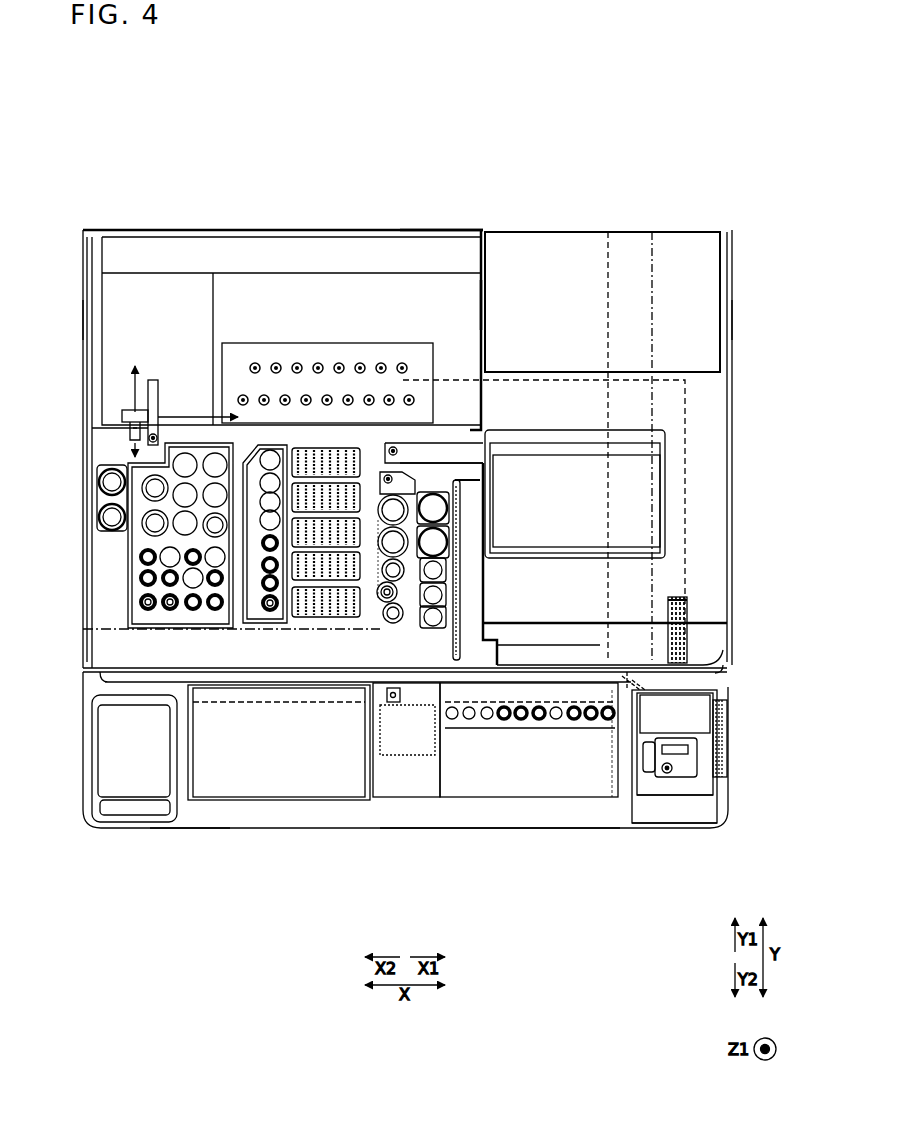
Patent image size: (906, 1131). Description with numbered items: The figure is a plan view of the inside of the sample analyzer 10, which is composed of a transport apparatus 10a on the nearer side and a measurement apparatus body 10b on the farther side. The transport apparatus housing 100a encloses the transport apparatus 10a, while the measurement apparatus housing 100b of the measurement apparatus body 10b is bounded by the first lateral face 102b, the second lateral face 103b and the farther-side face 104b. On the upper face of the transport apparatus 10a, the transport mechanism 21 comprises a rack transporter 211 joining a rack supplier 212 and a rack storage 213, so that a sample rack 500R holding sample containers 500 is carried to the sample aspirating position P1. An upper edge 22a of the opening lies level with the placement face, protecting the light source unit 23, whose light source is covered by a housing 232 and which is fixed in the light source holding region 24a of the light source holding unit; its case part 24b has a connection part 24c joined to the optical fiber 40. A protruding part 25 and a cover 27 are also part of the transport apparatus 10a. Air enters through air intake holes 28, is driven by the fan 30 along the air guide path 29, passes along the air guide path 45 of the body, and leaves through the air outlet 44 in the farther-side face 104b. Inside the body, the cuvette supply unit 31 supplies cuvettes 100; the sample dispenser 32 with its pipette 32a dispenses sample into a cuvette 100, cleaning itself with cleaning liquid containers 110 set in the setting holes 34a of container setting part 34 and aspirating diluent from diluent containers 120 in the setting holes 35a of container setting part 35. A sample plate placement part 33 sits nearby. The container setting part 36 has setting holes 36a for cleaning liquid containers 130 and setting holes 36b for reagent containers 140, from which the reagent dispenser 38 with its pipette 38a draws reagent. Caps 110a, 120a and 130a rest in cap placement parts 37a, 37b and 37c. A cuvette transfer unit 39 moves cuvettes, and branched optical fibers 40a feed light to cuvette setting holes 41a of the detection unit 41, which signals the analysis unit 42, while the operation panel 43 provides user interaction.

The sample analyzer 10 is at (386, 138).
The transport apparatus 10a is at (503, 832).
The measurement apparatus body 10b is at (486, 224).
The cuvette 100 is at (405, 455).
The transport apparatus housing 100a is at (190, 832).
The measurement apparatus housing 100b is at (276, 229).
The first lateral face 102b is at (731, 322).
The second lateral face 103b is at (86, 322).
The farther-side face 104b is at (656, 234).
The transport mechanism 21 is at (284, 776).
The rack transporter 211 is at (350, 690).
The rack supplier 212 is at (476, 786).
The rack storage 213 is at (243, 776).
The upper edge 22a is at (647, 806).
The light source unit 23 is at (682, 782).
The housing 232 is at (690, 774).
The light source holding region 24a is at (712, 790).
The case part 24b is at (675, 716).
The connection part 24c is at (692, 684).
The protruding part 25 is at (432, 812).
The cover 27 is at (105, 832).
The air intake hole 28 is at (729, 769).
The air guide path 29 is at (617, 732).
The fan 30 is at (625, 663).
The cuvette supply unit 31 is at (578, 504).
The sample dispenser 32 is at (560, 465).
The pipette 32a is at (440, 462).
The sample plate placement part 33 is at (301, 622).
The container setting part 34 is at (371, 552).
The setting hole 34a is at (458, 482).
The container setting part 35 is at (393, 628).
The setting hole 35a is at (430, 627).
The container setting part 36 is at (128, 630).
The setting hole 36a is at (155, 525).
The setting hole 36b is at (266, 528).
The cap placement part 37a is at (434, 542).
The cap placement part 37b is at (434, 617).
The cap placement part 37c is at (100, 518).
The reagent dispenser 38 is at (161, 404).
The pipette 38a is at (158, 436).
The cuvette transfer unit 39 is at (123, 407).
The optical fiber 40 is at (692, 660).
The branched optical fiber 40a is at (692, 620).
The detection unit 41 is at (352, 340).
The cuvette setting hole 41a is at (382, 364).
The analysis unit 42 is at (478, 298).
The operation panel 43 is at (589, 633).
The air outlet 44 is at (630, 229).
The air guide path 45 is at (610, 328).
The cleaning liquid container 110 is at (386, 475).
The cap 110a is at (434, 570).
The diluent container 120 is at (386, 598).
The cap 120a is at (434, 595).
The cleaning liquid container 130 is at (185, 525).
The cap 130a is at (100, 516).
The reagent container 140 is at (270, 608).
The sample container 500 is at (566, 735).
The sample rack 500R is at (506, 752).
The sample aspirating position P1 is at (393, 702).